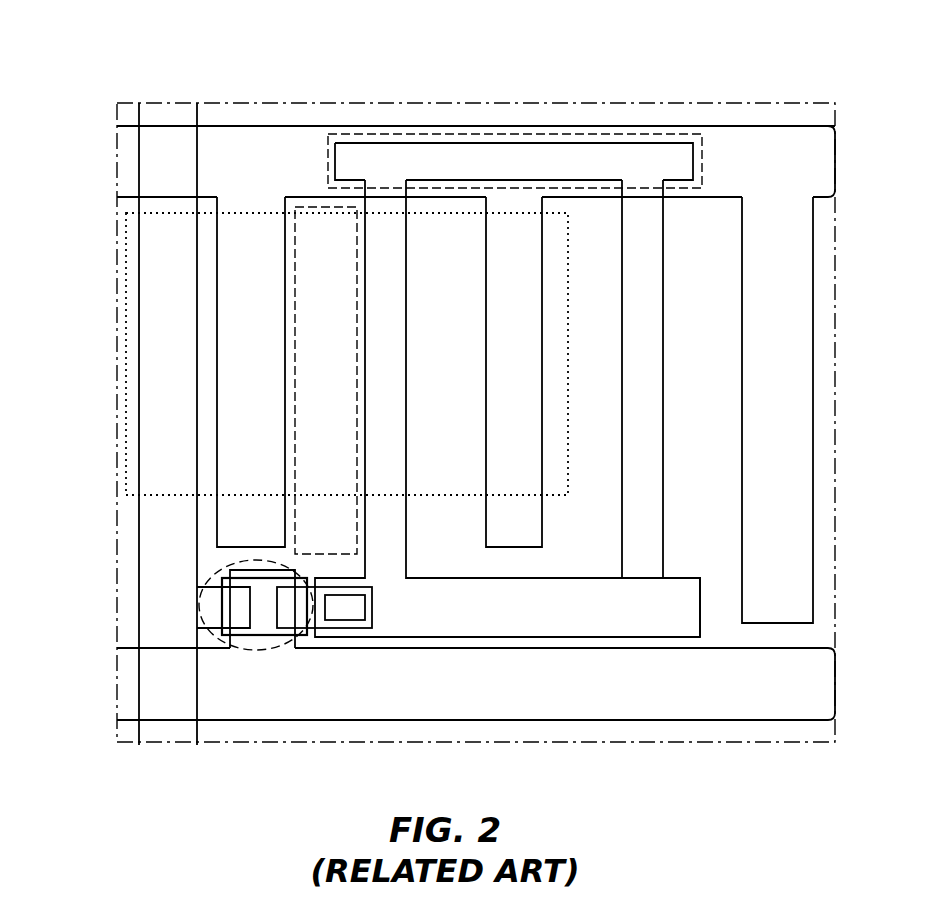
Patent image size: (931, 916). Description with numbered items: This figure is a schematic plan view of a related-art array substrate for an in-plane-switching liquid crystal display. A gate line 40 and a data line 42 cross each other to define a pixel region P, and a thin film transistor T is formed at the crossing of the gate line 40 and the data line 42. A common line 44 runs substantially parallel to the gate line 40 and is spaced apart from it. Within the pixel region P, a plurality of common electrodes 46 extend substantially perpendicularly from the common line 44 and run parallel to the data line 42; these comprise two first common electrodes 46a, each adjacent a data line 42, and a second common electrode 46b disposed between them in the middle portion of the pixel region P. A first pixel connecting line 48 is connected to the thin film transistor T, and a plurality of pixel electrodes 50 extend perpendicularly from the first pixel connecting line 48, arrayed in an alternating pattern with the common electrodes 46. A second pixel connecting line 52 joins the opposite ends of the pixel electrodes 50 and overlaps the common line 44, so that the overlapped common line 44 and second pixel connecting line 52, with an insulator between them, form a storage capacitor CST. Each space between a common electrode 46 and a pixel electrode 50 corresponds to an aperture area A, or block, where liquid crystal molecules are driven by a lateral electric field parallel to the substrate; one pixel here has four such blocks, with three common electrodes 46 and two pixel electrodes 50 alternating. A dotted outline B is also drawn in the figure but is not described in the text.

The gate line 40 is at (838, 655).
The data line 42 is at (139, 746).
The common line 44 is at (838, 130).
The common electrodes 46 is at (248, 55).
The first common electrodes 46a is at (252, 245).
The second common electrode 46b is at (512, 245).
The first pixel connecting line 48 is at (682, 592).
The pixel electrodes 50 is at (387, 552).
The second pixel connecting line 52 is at (631, 142).
The storage capacitor CST is at (703, 163).
The thin film transistor T is at (265, 650).
The pixel region P is at (723, 622).
The aperture area A is at (296, 313).
The region B is at (125, 382).